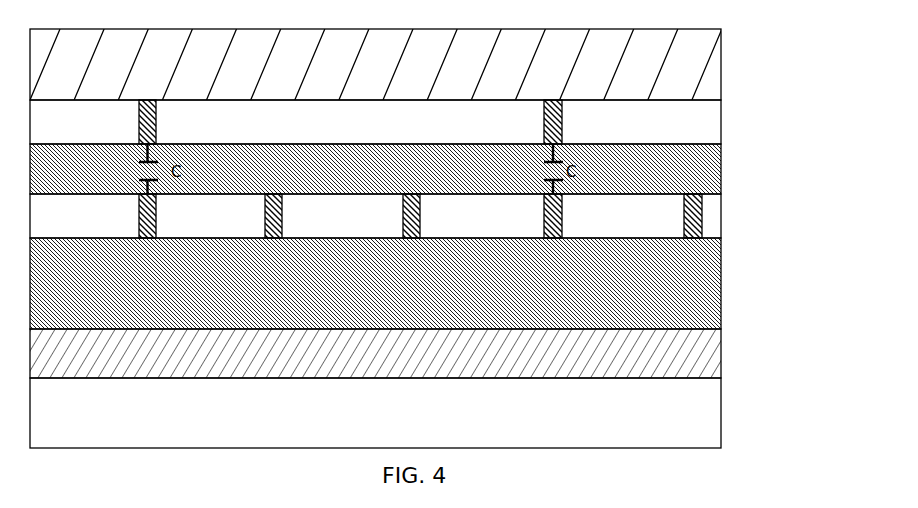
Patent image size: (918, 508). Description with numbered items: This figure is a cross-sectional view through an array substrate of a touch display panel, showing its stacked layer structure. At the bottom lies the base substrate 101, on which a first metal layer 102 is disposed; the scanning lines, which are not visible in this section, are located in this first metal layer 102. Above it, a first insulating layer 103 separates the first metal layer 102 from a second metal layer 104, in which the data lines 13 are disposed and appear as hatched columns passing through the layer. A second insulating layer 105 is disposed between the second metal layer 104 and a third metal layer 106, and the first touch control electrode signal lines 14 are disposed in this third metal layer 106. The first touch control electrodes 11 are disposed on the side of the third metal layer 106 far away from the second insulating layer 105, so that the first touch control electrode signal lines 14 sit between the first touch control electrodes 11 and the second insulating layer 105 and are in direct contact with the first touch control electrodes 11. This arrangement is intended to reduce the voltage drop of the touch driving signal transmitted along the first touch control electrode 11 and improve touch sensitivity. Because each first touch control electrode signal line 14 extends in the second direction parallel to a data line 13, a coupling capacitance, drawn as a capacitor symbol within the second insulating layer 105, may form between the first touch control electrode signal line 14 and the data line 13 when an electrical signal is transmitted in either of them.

The first touch control electrode 11 is at (721, 65).
The data line 13 is at (157, 232).
The first touch control electrode signal line 14 is at (157, 135).
The base substrate 101 is at (721, 430).
The first metal layer 102 is at (721, 362).
The first insulating layer 103 is at (721, 281).
The second metal layer 104 is at (721, 218).
The second insulating layer 105 is at (721, 168).
The third metal layer 106 is at (721, 122).